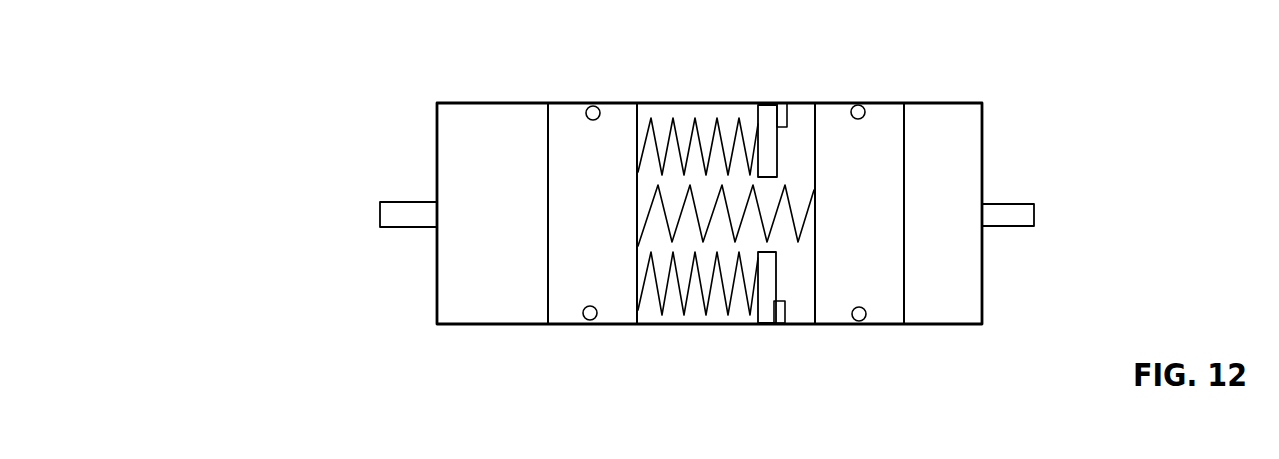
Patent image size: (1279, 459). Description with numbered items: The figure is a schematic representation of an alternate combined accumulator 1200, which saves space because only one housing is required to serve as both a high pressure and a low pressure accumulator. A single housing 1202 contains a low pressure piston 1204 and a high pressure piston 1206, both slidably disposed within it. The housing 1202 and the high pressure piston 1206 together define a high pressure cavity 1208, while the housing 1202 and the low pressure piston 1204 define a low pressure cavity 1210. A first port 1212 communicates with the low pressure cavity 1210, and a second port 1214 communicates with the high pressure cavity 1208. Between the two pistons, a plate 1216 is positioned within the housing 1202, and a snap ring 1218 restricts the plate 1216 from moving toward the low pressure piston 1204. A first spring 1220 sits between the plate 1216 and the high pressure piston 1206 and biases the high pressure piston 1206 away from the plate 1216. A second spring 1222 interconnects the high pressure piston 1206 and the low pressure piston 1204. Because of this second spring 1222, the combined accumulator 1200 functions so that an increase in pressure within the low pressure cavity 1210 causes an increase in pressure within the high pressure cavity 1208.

The combined accumulator 1200 is at (1138, 200).
The housing 1202 is at (952, 325).
The low pressure piston 1204 is at (883, 112).
The high pressure piston 1206 is at (567, 112).
The high pressure cavity 1208 is at (503, 102).
The low pressure cavity 1210 is at (937, 103).
The first port 1212 is at (1020, 227).
The second port 1214 is at (397, 202).
The plate 1216 is at (770, 323).
The snap ring 1218 is at (783, 322).
The first spring 1220 is at (687, 126).
The second spring 1222 is at (660, 218).